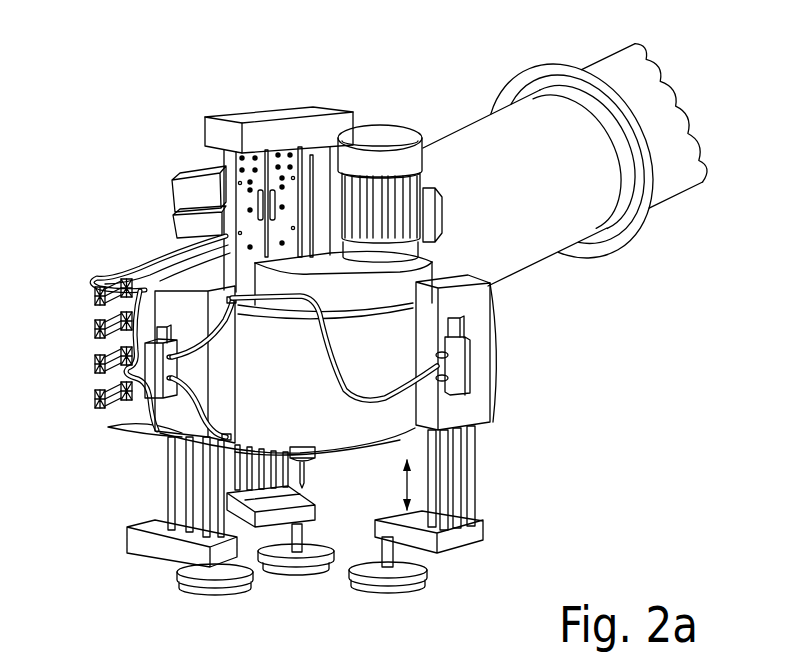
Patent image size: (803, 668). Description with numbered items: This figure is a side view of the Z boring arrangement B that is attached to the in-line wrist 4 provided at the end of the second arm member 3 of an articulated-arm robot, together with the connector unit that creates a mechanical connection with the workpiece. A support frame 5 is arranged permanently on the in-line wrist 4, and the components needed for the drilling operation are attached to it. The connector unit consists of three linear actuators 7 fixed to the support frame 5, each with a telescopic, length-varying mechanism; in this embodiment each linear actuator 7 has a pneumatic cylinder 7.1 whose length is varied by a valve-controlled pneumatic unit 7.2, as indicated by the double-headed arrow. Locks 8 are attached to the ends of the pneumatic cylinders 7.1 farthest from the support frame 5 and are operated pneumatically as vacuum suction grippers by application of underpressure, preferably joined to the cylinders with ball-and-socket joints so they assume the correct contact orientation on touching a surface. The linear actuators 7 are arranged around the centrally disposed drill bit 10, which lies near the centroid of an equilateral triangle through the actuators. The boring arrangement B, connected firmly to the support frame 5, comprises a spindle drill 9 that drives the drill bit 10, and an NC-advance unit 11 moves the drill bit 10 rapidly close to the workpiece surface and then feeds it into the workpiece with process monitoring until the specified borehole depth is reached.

The boring arrangement B is at (355, 332).
The second arm member 3 is at (643, 213).
The in-line wrist 4 is at (178, 250).
The support frame 5 is at (248, 366).
The linear actuator 7 is at (355, 421).
The pneumatic cylinder 7.1 is at (485, 484).
The valve-controlled pneumatic unit 7.2 is at (165, 403).
The lock 8 is at (197, 592).
The spindle drill 9 is at (283, 283).
The drill bit 10 is at (303, 502).
The NC-advance unit 11 is at (281, 155).